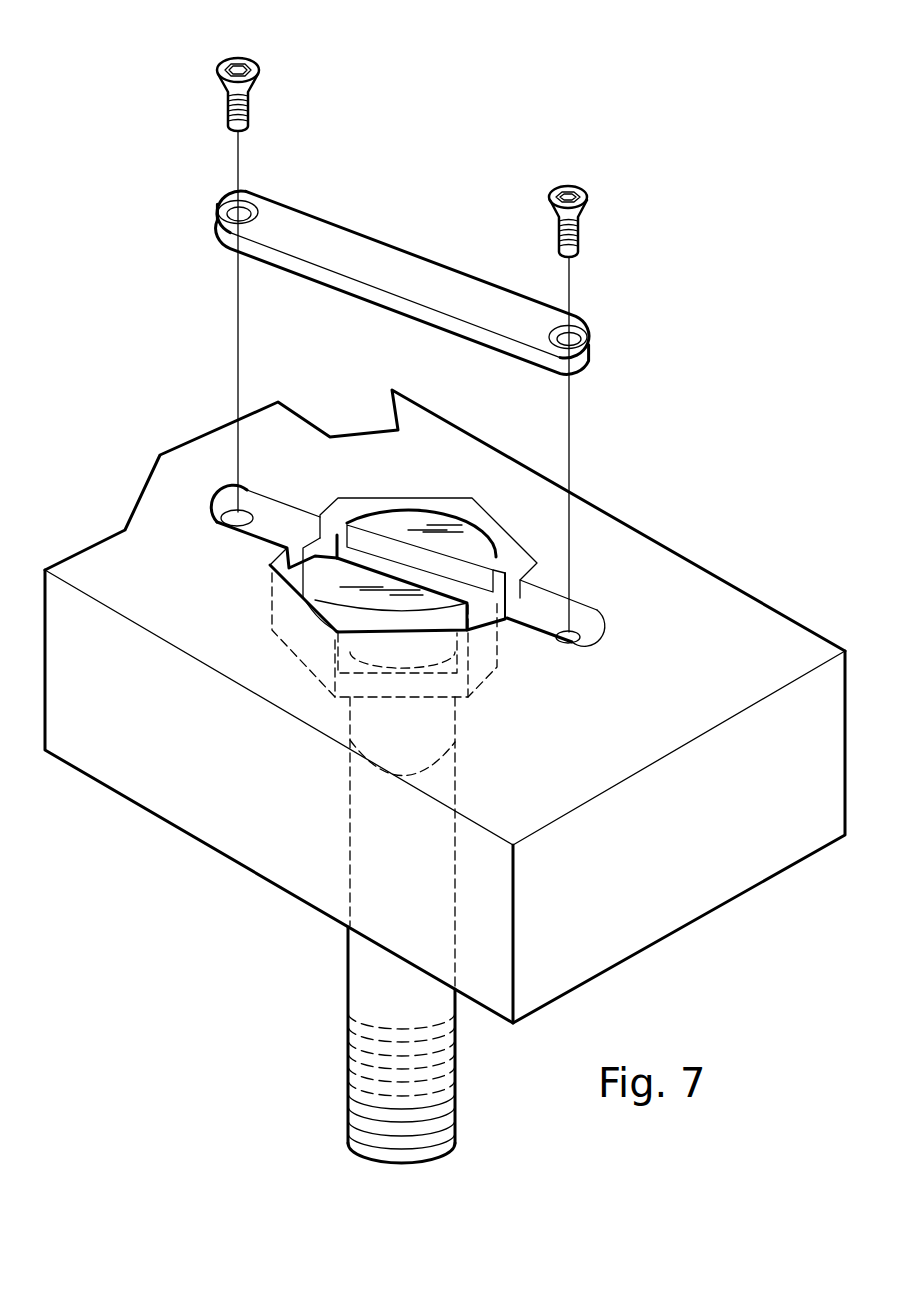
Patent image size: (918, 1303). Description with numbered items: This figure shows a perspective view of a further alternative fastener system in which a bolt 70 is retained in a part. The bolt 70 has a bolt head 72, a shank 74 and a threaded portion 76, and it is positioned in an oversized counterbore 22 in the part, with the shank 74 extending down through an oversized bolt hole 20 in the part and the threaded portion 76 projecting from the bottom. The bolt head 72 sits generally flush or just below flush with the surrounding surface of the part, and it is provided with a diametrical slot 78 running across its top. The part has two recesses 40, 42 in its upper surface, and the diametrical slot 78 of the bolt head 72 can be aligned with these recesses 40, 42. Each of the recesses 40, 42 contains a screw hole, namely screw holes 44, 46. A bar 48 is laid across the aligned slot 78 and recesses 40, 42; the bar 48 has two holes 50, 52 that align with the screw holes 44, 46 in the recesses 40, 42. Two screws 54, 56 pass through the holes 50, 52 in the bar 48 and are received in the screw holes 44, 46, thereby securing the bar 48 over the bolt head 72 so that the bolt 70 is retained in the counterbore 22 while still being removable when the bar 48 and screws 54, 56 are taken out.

The bolt hole 20 is at (468, 723).
The counterbore 22 is at (418, 497).
The recess 40 is at (560, 597).
The recess 42 is at (273, 503).
The screw hole 44 is at (572, 637).
The screw hole 46 is at (237, 512).
The bar 48 is at (353, 253).
The hole 50 is at (223, 193).
The hole 52 is at (577, 330).
The screw 54 is at (222, 72).
The screw 56 is at (590, 200).
The bolt 70 is at (463, 770).
The bolt head 72 is at (350, 597).
The shank 74 is at (370, 860).
The threaded portion 76 is at (352, 1027).
The diametrical slot 78 is at (405, 557).